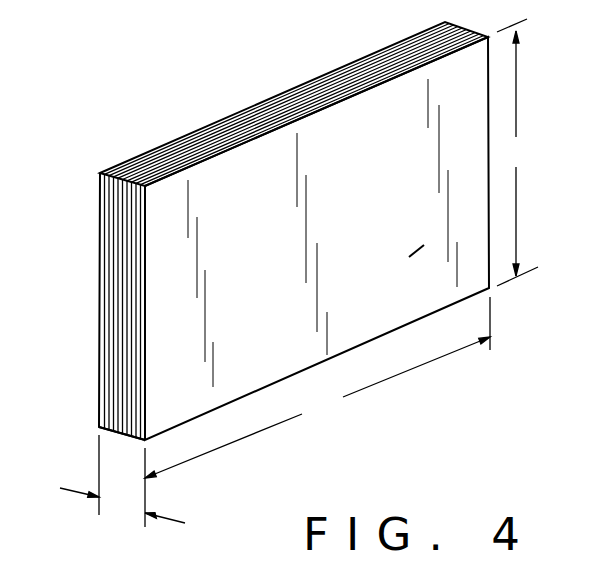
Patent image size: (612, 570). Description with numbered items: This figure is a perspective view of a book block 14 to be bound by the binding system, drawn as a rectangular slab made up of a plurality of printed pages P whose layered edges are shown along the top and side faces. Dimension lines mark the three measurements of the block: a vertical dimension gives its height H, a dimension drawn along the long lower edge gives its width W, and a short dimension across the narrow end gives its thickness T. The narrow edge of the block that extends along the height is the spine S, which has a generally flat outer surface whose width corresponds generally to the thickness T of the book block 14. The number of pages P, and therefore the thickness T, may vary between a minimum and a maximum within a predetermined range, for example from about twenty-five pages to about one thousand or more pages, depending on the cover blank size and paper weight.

The printed pages P is at (176, 140).
The spine S is at (125, 436).
The book block 14 is at (418, 252).
The width W is at (517, 152).
The height H is at (317, 387).
The thickness T is at (122, 481).